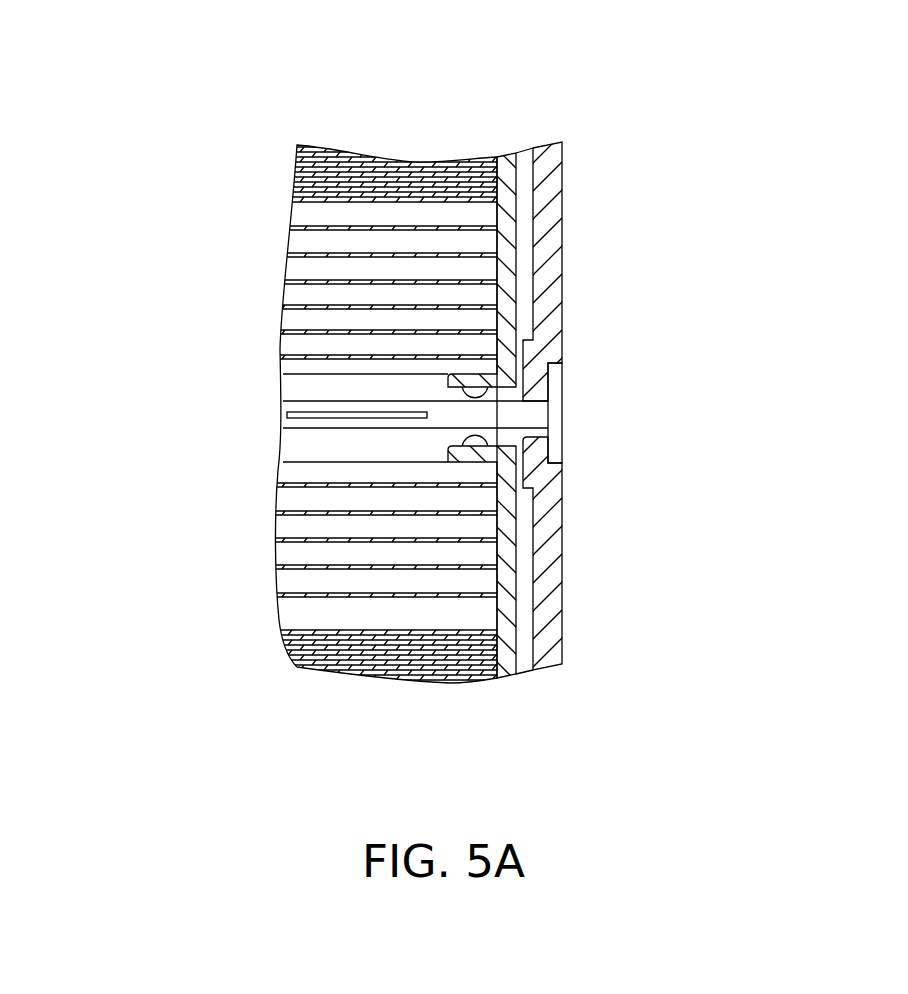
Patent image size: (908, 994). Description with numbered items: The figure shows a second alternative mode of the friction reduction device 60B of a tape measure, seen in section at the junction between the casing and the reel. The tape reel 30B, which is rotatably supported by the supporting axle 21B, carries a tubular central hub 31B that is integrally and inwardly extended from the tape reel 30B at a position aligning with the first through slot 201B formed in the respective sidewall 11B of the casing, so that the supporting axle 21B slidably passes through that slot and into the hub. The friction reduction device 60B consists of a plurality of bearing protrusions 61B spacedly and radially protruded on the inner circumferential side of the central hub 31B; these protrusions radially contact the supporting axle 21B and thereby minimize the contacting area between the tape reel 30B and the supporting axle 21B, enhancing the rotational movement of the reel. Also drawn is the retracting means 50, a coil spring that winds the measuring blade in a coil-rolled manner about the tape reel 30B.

The sidewall 11B is at (551, 219).
The supporting axle 21B is at (320, 407).
The tape reel 30B is at (503, 218).
The central hub 31B is at (473, 372).
The retracting means 50 is at (452, 567).
The friction reduction device 60B is at (454, 391).
The bearing protrusions 61B is at (483, 402).
The first through slot 201B is at (568, 452).